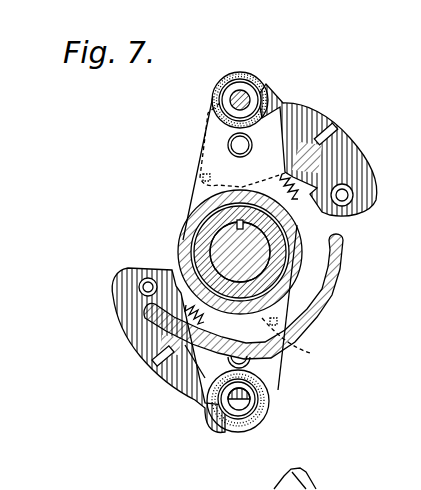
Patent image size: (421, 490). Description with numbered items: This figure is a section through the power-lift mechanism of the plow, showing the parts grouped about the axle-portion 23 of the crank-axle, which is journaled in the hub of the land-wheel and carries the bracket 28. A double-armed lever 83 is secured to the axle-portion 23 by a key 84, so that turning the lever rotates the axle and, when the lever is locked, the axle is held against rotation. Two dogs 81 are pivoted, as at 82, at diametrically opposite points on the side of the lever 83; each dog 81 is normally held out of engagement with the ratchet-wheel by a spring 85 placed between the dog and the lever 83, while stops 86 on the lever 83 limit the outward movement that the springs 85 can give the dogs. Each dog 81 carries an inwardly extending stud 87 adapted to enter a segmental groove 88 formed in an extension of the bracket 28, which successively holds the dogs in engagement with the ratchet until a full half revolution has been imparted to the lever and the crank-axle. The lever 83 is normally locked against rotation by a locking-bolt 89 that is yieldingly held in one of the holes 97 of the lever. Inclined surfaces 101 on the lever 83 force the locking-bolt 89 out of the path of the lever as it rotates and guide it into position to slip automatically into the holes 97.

The axle-portion 23 is at (202, 239).
The bracket 28 is at (190, 252).
The dog 81 is at (372, 167).
The pivot 82 is at (238, 157).
The double-armed lever 83 is at (208, 142).
The key 84 is at (204, 204).
The spring 85 is at (318, 155).
The stop 86 is at (202, 178).
The stud 87 is at (352, 201).
The segmental groove 88 is at (330, 294).
The locking-bolt 89 is at (225, 100).
The hole 97 is at (246, 93).
The inclined surface 101 is at (250, 101).